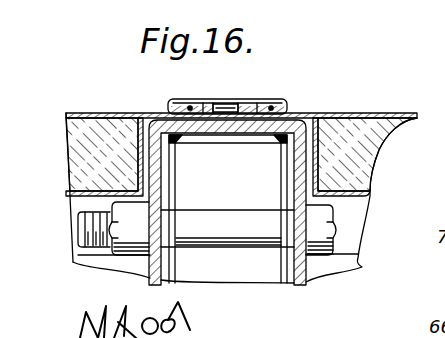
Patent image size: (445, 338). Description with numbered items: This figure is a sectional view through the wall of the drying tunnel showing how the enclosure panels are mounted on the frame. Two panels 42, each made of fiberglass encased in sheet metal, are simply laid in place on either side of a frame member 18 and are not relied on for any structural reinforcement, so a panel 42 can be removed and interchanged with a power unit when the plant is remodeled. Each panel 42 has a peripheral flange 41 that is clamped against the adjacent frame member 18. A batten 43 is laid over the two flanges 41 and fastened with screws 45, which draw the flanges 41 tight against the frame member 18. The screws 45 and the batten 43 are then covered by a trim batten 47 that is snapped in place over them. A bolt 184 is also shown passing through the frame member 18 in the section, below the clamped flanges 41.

The frame member 18 is at (301, 122).
The panel 42 is at (108, 128).
The batten 43 is at (256, 108).
The peripheral flange 41 is at (197, 108).
The screws 45 is at (228, 108).
The trim batten 47 is at (211, 104).
The bolt 184 is at (223, 235).